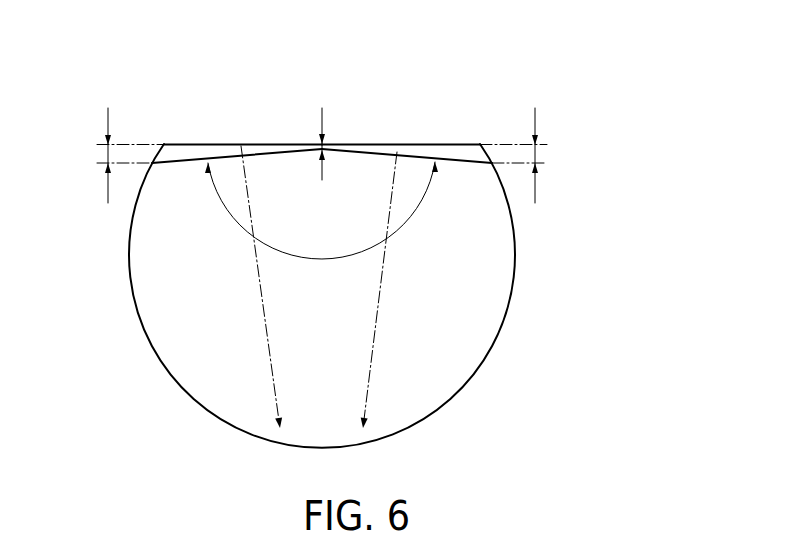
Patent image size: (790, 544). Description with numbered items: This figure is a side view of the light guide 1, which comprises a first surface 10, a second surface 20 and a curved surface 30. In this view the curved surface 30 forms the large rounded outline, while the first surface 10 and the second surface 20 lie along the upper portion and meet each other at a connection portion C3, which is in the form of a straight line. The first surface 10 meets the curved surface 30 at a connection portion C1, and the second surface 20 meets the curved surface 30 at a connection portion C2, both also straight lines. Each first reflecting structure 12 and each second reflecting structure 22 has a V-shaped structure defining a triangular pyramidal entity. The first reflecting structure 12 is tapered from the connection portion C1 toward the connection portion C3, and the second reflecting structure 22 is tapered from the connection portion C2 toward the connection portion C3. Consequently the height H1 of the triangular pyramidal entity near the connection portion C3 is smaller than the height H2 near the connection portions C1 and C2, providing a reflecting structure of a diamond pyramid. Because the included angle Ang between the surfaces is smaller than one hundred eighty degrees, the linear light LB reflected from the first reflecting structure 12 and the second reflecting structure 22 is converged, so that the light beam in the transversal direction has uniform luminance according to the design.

The light guide 1 is at (335, 68).
The first surface 10 is at (452, 157).
The first reflecting structure 12 is at (428, 144).
The second surface 20 is at (188, 158).
The second reflecting structure 22 is at (240, 145).
The curved surface 30 is at (148, 342).
The connection portion C1 is at (478, 144).
The connection portion C2 is at (163, 145).
The connection portion C3 is at (318, 143).
The height H1 is at (347, 144).
The height H2 is at (322, 155).
The included angle Ang is at (321, 210).
The linear light LB is at (373, 323).